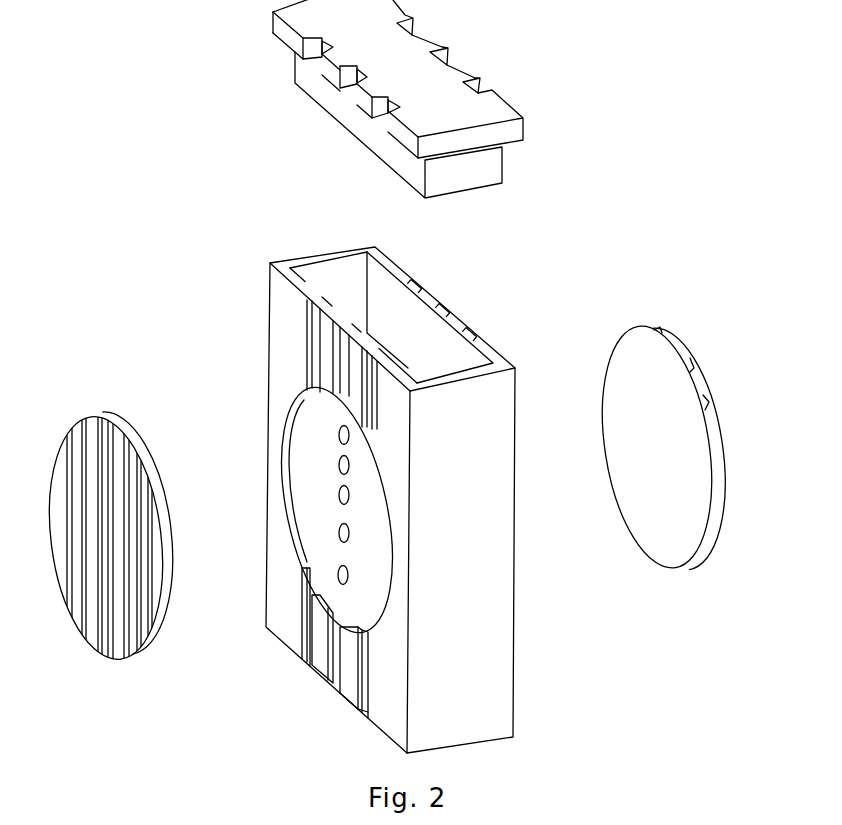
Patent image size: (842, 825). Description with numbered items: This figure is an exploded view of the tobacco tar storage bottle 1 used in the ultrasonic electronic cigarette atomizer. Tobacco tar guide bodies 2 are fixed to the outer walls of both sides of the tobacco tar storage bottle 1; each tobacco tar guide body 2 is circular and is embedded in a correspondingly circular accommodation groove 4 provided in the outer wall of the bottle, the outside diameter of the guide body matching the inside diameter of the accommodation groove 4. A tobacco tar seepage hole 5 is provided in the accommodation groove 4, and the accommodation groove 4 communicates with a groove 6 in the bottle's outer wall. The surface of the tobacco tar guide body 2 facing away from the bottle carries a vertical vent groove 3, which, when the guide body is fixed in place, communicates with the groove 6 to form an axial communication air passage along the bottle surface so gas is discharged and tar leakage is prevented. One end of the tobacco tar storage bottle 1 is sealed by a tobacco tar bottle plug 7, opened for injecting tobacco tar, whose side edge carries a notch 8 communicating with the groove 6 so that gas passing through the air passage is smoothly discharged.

The tobacco tar storage bottle 1 is at (455, 427).
The tobacco tar guide body 2 is at (122, 433).
The vertical vent groove 3 is at (80, 448).
The accommodation groove 4 is at (317, 470).
The tobacco tar seepage hole 5 is at (340, 578).
The groove 6 is at (305, 303).
The tobacco tar bottle plug 7 is at (447, 117).
The notch 8 is at (372, 107).